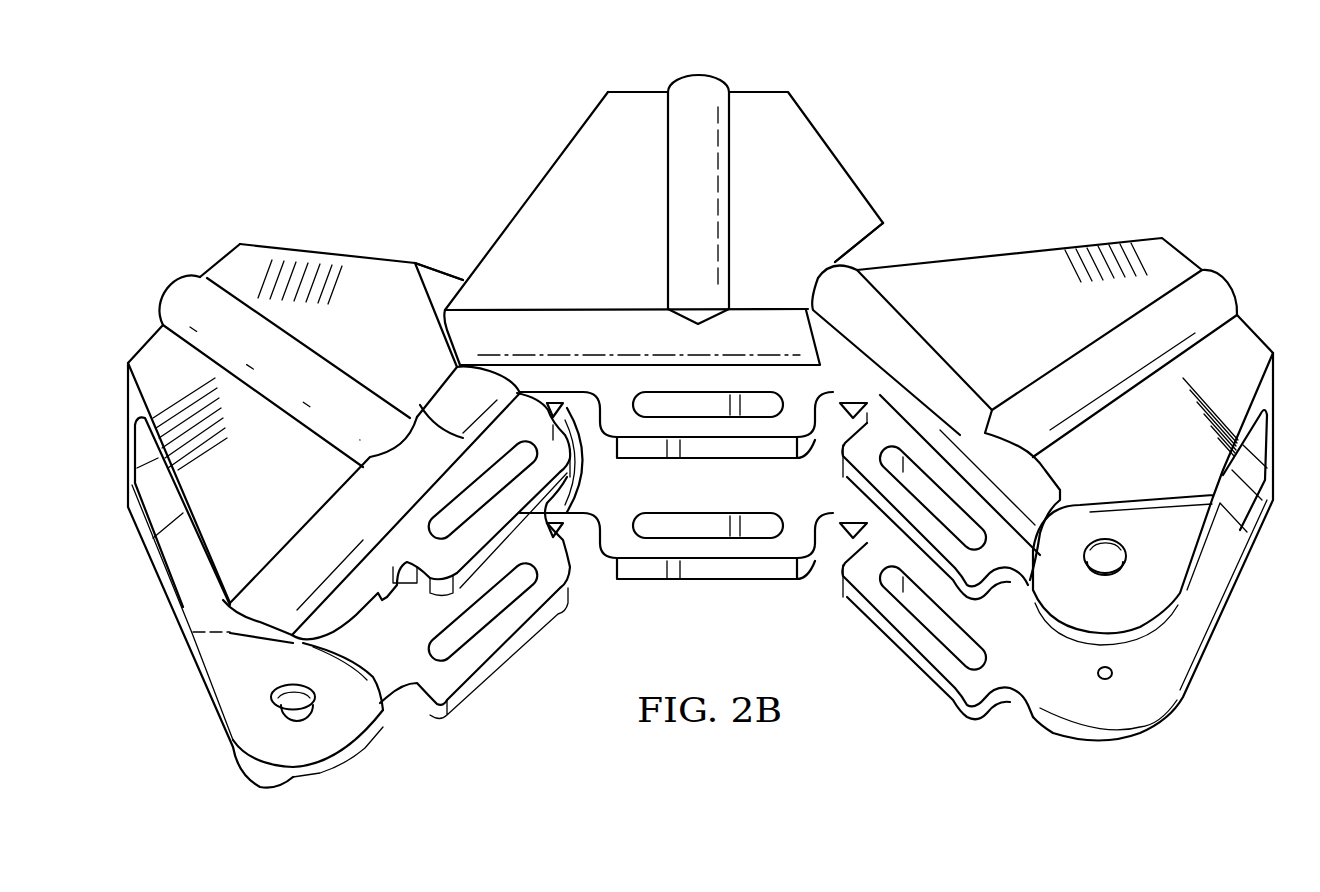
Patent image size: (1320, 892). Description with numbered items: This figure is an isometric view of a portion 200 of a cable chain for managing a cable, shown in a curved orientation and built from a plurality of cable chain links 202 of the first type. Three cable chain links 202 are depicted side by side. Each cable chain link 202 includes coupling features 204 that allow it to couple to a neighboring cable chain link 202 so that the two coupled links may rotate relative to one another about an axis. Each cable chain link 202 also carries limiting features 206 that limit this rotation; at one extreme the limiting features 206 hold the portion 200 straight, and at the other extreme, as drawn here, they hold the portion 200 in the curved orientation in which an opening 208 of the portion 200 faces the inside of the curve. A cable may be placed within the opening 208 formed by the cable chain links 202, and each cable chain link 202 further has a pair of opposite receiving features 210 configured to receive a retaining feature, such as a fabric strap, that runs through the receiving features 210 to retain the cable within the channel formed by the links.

The portion of a cable chain 200 is at (470, 147).
The cable chain link 202 is at (278, 250).
The coupling feature 204 is at (310, 710).
The limiting feature 206 is at (430, 298).
The opening 208 is at (796, 495).
The receiving feature 210 is at (480, 483).